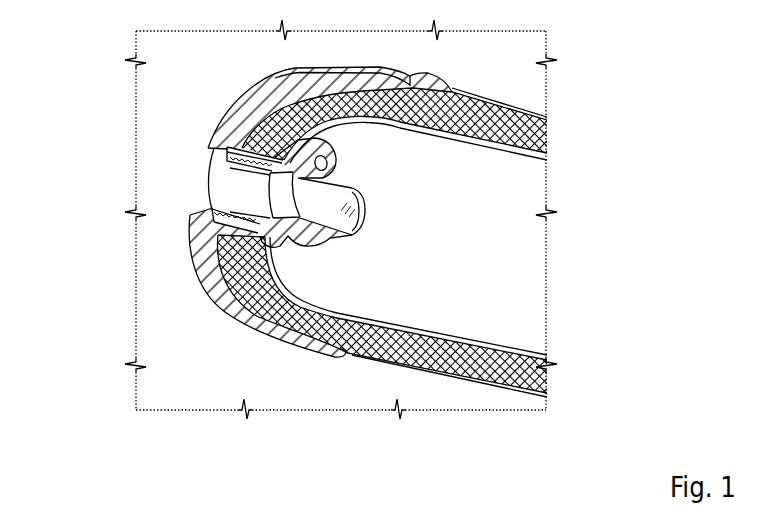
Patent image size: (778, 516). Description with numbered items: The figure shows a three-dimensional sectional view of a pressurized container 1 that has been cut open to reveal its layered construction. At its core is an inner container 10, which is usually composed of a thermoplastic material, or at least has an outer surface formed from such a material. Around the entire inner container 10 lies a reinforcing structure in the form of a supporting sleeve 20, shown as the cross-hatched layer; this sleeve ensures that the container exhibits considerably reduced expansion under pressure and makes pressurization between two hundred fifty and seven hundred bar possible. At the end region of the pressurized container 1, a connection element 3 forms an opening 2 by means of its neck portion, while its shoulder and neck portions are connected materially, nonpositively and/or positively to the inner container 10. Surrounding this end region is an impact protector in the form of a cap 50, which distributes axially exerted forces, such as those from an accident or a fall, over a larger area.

The pressurized container 1 is at (605, 24).
The opening 2 is at (197, 173).
The connection element 3 is at (238, 193).
The inner container 10 is at (543, 158).
The supporting sleeve 20 is at (532, 137).
The cap 50 is at (245, 110).